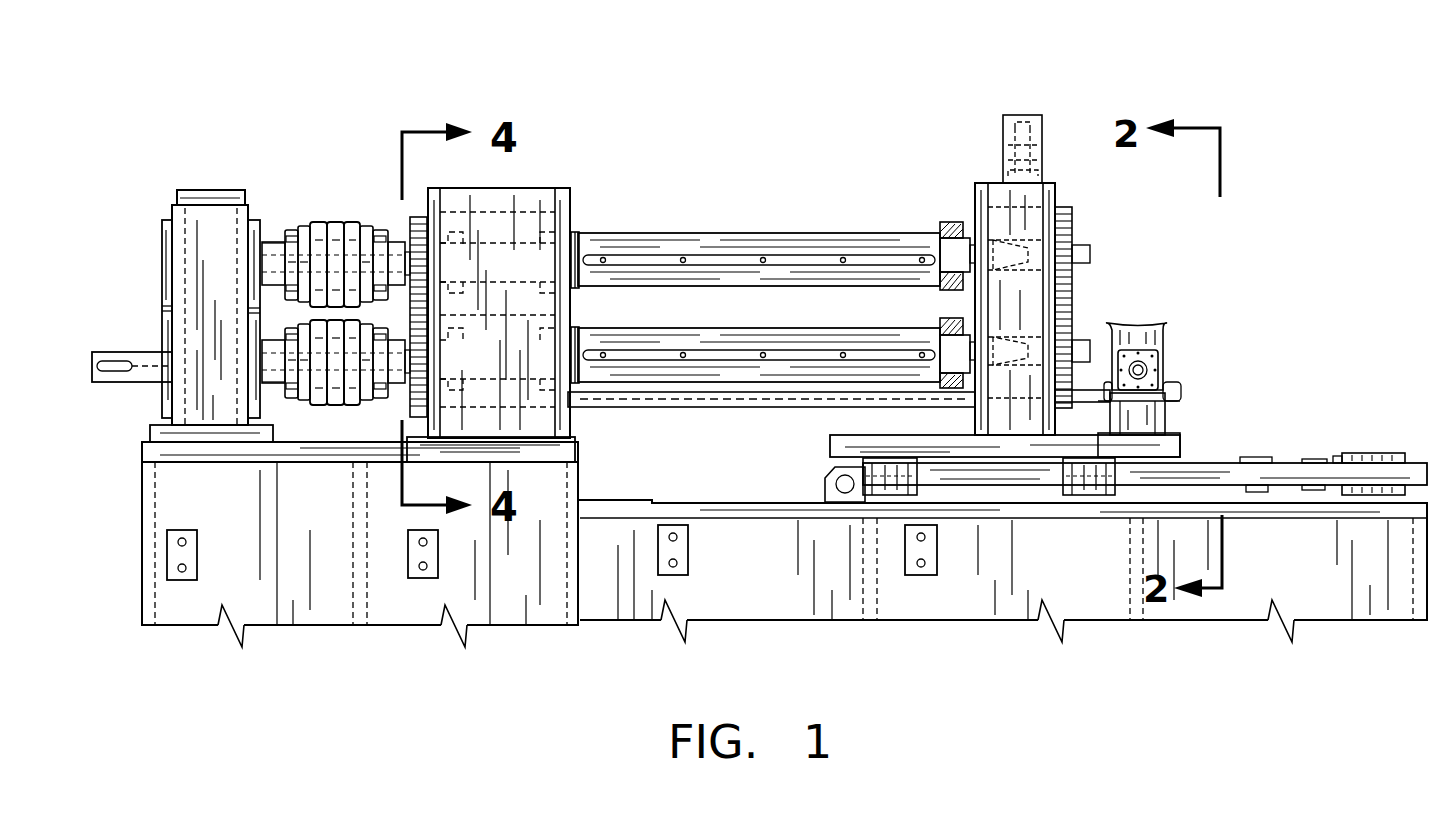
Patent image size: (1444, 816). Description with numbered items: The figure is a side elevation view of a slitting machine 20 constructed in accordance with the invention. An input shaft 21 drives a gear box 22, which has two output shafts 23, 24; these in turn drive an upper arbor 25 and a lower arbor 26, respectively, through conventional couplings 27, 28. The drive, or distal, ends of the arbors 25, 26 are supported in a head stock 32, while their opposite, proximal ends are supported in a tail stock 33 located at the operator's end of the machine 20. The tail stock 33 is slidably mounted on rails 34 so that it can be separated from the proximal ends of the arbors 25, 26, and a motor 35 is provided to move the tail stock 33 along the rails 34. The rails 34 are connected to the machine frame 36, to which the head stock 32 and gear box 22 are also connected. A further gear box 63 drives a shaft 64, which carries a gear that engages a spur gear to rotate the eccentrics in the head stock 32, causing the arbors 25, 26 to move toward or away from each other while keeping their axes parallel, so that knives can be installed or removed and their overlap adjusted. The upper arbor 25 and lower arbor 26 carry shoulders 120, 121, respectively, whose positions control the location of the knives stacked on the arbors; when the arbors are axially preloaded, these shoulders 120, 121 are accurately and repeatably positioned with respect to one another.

The slitting machine 20 is at (935, 98).
The input shaft 21 is at (136, 352).
The gear box 22 is at (207, 190).
The output shaft 23 is at (264, 242).
The output shaft 24 is at (264, 382).
The upper arbor 25 is at (636, 236).
The lower arbor 26 is at (630, 332).
The coupling 27 is at (332, 222).
The coupling 28 is at (335, 405).
The head stock 32 is at (506, 178).
The tail stock 33 is at (982, 174).
The rails 34 is at (1202, 463).
The motor 35 is at (1380, 453).
The machine frame 36 is at (925, 600).
The gear box 63 is at (1163, 342).
The shaft 64 is at (785, 410).
The shoulder 120 is at (580, 232).
The shoulder 121 is at (578, 384).